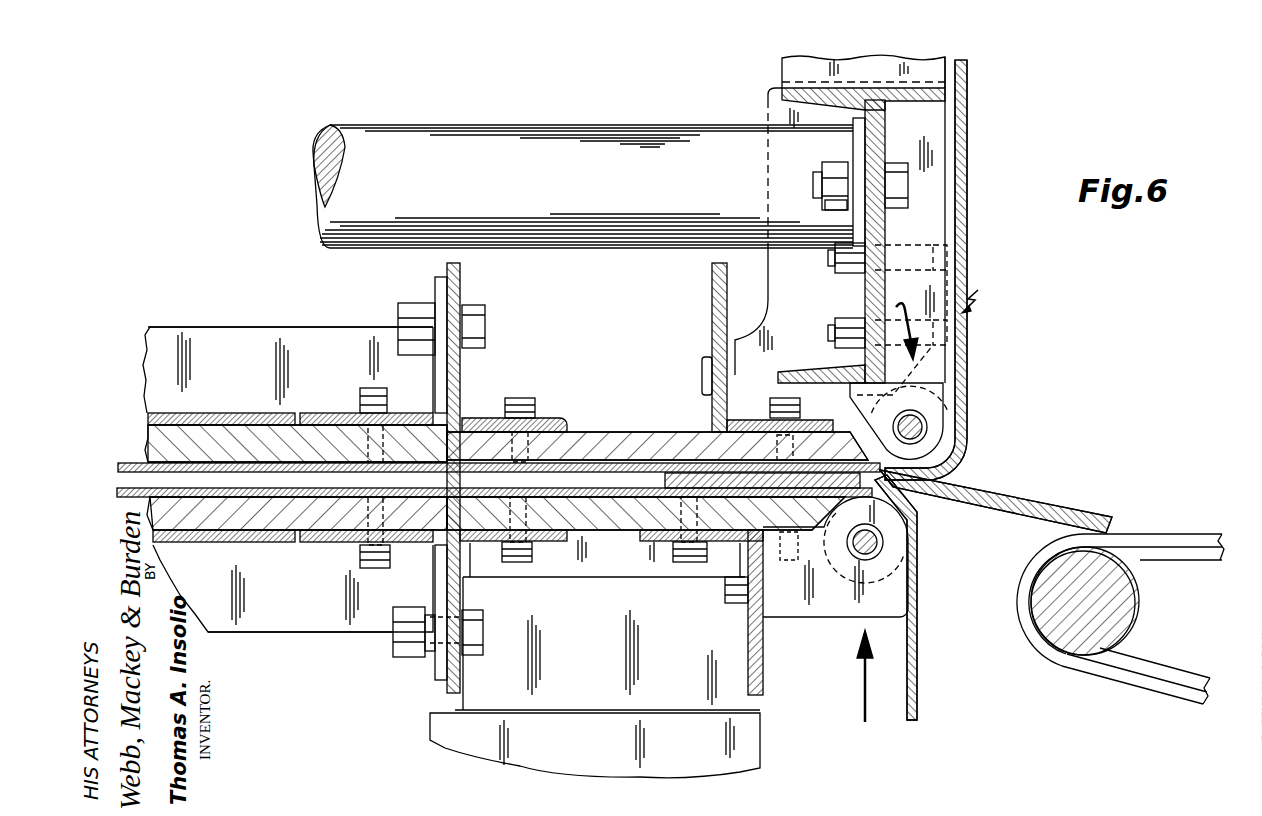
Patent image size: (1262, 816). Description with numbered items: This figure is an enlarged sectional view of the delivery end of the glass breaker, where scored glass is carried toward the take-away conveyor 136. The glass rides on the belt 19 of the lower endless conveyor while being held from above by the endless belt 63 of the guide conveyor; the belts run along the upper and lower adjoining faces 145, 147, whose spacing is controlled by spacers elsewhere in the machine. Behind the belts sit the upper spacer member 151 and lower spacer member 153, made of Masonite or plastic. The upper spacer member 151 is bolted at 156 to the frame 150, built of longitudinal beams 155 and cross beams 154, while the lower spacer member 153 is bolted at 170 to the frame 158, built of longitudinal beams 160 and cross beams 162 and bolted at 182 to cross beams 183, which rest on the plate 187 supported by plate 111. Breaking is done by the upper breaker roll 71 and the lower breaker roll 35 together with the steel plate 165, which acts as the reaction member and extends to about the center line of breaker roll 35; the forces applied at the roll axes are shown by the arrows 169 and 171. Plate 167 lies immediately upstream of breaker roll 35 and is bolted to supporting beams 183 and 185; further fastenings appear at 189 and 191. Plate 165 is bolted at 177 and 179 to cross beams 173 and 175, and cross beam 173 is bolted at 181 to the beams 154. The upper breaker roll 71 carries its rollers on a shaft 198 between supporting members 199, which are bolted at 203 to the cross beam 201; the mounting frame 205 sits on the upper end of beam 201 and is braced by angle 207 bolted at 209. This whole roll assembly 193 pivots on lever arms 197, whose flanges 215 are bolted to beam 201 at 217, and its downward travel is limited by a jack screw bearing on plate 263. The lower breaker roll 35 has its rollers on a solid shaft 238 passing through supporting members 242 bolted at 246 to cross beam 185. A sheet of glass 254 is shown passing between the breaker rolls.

The belt 19 is at (917, 652).
The breaker roller 35 is at (905, 586).
The endless belt 63 is at (958, 332).
The breaker roller 71 is at (957, 393).
The plate 111 is at (760, 705).
The take-away conveyor 136 is at (1188, 530).
The upper adjoining face 145 is at (118, 468).
The lower adjoining face 147 is at (120, 491).
The frame 150 is at (274, 322).
The upper spacer member 151 is at (250, 418).
The lower spacer member 153 is at (230, 527).
The cross beams 154 is at (447, 283).
The longitudinal beams 155 is at (202, 332).
The bolt 156 is at (360, 400).
The frame 158 is at (312, 640).
The longitudinal beams 160 is at (265, 628).
The cross beams 162 is at (435, 670).
The plate 165 is at (661, 438).
The plate 167 is at (618, 520).
The arrow 169 is at (903, 318).
The bolt 170 is at (360, 553).
The arrow 171 is at (862, 682).
The cross beam 173 is at (462, 386).
The cross beam 175 is at (712, 315).
The bolt 177 is at (535, 410).
The bolt 179 is at (800, 410).
The bolt 181 is at (398, 310).
The bolt 182 is at (393, 648).
The cross beams 183 is at (463, 675).
The cross beam 185 is at (763, 675).
The plate 187 is at (597, 560).
The bolt 189 is at (536, 556).
The bolt 191 is at (678, 557).
The roll assembly 193 is at (1021, 309).
The lever arms 197 is at (618, 125).
The shaft 198 is at (923, 427).
The supporting members 199 is at (940, 368).
The cross beam 201 is at (858, 372).
The bolt 203 is at (840, 318).
The mounting frame 205 is at (782, 66).
The angle 207 is at (925, 100).
The bolt 209 is at (908, 205).
The flanges 215 is at (853, 150).
The bolt 217 is at (834, 210).
The shaft 238 is at (882, 543).
The supporting members 242 is at (815, 612).
The bolt 246 is at (738, 600).
The sheet of glass 254 is at (668, 480).
The plate 263 is at (702, 382).